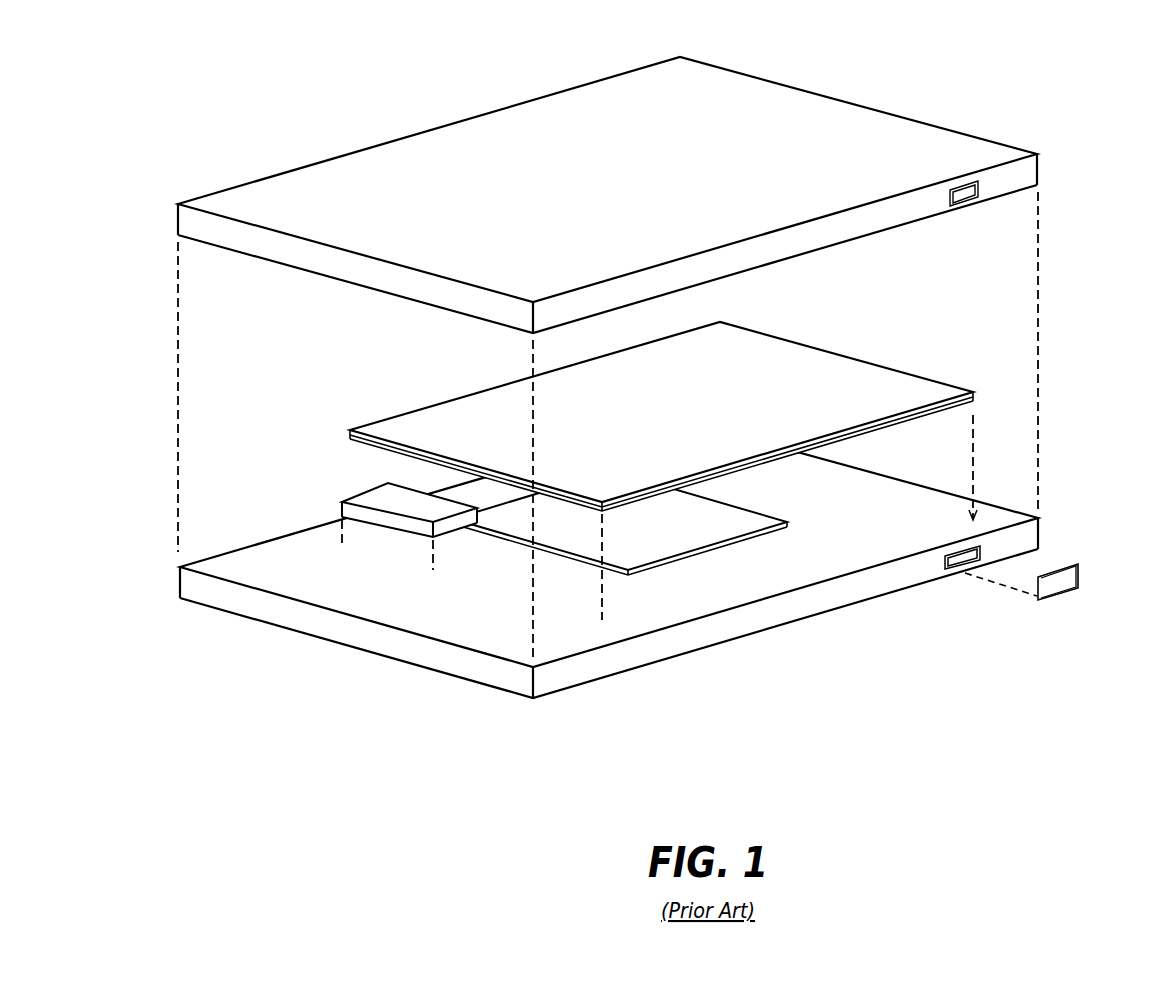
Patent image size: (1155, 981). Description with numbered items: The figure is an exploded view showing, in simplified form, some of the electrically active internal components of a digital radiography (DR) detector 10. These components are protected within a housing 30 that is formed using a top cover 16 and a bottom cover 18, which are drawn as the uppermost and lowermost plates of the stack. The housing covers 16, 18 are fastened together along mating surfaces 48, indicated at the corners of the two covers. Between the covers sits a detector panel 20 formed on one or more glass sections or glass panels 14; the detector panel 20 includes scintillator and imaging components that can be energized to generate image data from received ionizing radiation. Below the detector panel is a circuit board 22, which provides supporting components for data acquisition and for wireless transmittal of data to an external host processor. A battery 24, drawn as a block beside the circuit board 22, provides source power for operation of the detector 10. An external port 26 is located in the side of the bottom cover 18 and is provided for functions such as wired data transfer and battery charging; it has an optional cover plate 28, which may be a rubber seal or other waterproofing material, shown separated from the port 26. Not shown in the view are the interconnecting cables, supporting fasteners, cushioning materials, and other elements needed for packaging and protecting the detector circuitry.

The DR detector 10 is at (253, 87).
The glass panel 14 is at (678, 398).
The top cover 16 is at (1041, 160).
The bottom cover 18 is at (311, 633).
The detector panel 20 is at (866, 364).
The circuit board 22 is at (787, 522).
The battery 24 is at (342, 501).
The external port 26 is at (950, 571).
The cover plate 28 is at (1060, 598).
The housing 30 is at (1014, 113).
The mating surfaces 48 is at (188, 220).